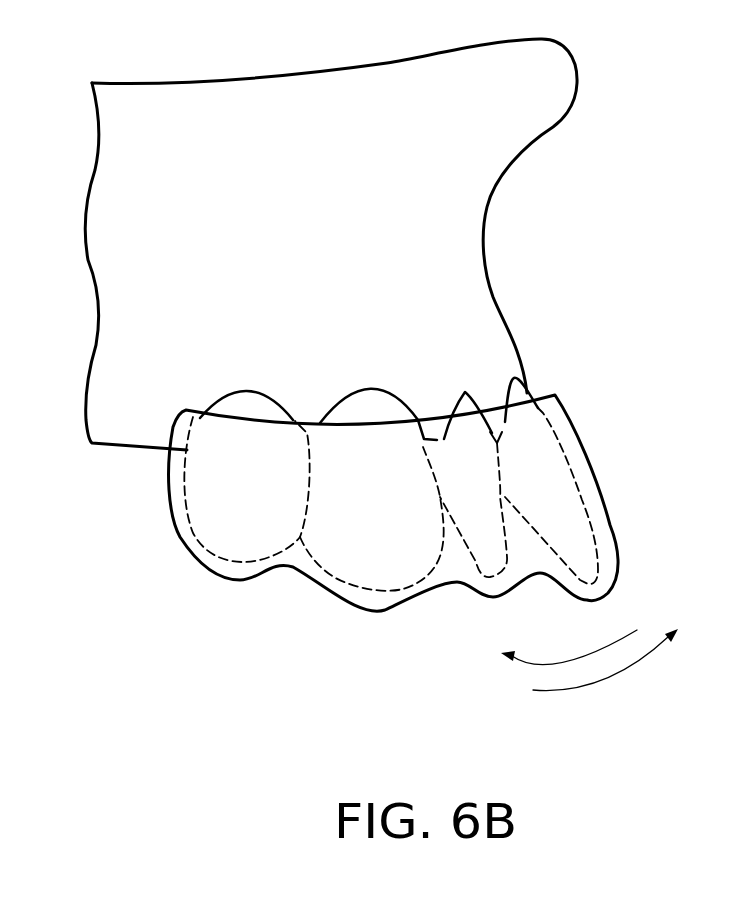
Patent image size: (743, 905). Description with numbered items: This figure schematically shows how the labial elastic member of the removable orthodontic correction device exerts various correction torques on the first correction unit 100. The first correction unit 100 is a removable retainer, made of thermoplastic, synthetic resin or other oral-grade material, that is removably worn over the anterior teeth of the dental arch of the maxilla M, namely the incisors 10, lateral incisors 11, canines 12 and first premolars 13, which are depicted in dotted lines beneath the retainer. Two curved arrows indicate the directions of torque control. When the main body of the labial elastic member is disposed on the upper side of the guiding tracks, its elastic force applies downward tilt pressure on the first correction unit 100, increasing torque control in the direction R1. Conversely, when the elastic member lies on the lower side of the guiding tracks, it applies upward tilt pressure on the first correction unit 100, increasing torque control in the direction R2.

The maxilla M is at (305, 127).
The first correction unit 100 is at (599, 494).
The incisors 10 is at (543, 467).
The lateral incisors 11 is at (487, 543).
The canines 12 is at (367, 540).
The first premolars 13 is at (243, 530).
The direction R1 is at (578, 631).
The direction R2 is at (586, 666).